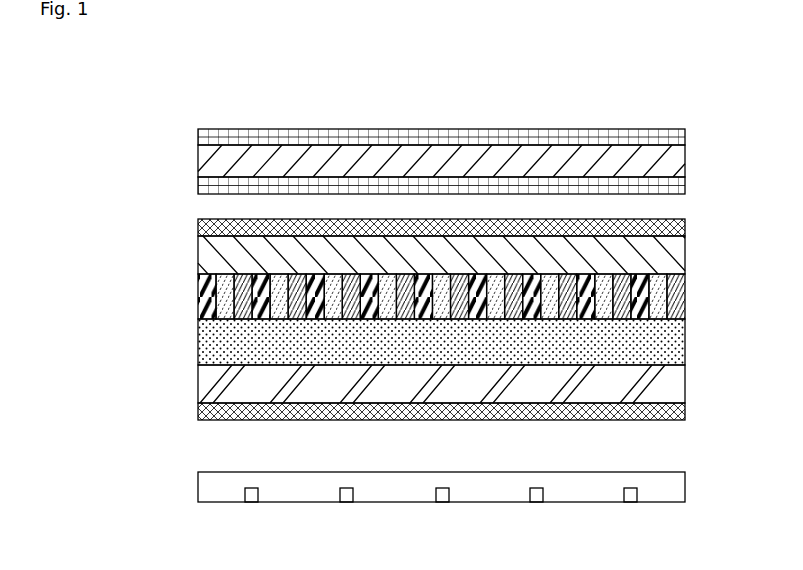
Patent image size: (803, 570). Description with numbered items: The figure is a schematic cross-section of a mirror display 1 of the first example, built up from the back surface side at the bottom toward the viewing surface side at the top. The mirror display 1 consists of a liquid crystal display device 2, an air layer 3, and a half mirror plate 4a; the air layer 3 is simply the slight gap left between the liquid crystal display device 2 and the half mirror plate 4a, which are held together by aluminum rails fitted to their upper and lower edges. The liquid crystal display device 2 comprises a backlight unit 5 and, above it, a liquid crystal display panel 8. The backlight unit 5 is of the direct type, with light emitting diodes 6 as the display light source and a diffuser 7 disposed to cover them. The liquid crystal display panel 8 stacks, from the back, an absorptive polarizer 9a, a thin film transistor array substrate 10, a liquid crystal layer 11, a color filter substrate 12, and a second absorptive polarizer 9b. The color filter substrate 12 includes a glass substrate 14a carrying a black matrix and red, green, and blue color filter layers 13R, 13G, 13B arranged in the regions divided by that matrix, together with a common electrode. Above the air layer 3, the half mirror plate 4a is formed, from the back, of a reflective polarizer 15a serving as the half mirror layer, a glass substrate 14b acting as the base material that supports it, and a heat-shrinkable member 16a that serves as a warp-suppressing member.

The mirror display 1 is at (170, 113).
The liquid crystal display device 2 is at (692, 218).
The air layer 3 is at (692, 195).
The half mirror plate 4a is at (110, 128).
The backlight unit 5 is at (134, 457).
The light emitting diodes 6 is at (245, 494).
The diffuser 7 is at (207, 492).
The liquid crystal display panel 8 is at (66, 212).
The absorptive polarizer 9a is at (205, 413).
The absorptive polarizer 9b is at (203, 228).
The thin film transistor array substrate 10 is at (208, 385).
The liquid crystal layer 11 is at (208, 343).
The color filter substrate 12 is at (108, 238).
The color filter layer (red) 13R is at (206, 283).
The color filter layer (green) 13G is at (223, 293).
The color filter layer (blue) 13B is at (242, 305).
The glass substrate 14a is at (201, 256).
The glass substrate 14b is at (201, 158).
The reflective polarizer 15a is at (205, 184).
The heat-shrinkable member 16a is at (205, 134).